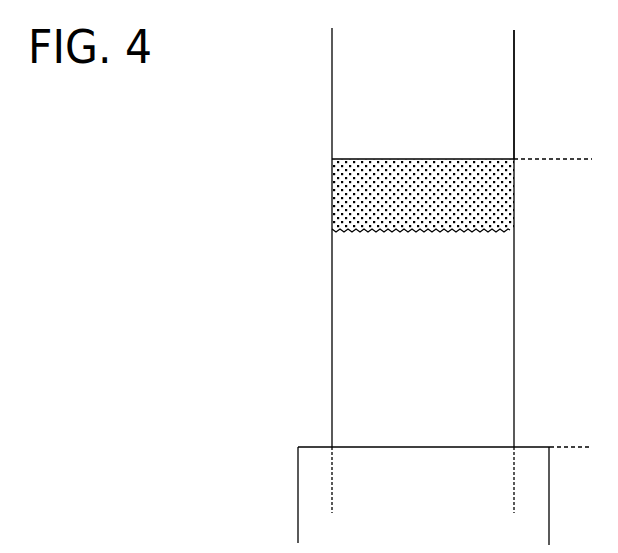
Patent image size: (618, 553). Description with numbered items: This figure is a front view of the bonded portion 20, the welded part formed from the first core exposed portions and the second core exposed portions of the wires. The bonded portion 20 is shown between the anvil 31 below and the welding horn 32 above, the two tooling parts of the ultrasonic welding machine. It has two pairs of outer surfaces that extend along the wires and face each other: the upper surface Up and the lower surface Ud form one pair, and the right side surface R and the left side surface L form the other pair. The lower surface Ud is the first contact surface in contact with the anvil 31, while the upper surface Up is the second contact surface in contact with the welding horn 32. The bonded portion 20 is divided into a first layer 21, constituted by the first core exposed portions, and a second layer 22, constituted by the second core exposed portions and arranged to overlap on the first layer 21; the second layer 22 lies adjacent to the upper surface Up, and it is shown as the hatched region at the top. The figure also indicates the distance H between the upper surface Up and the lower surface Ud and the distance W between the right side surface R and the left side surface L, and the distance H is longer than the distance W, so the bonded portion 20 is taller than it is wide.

The bonded portion 20 is at (270, 370).
The first layer 21 is at (345, 333).
The second layer 22 is at (345, 190).
The anvil 31 is at (549, 493).
The welding horn 32 is at (514, 43).
The upper surface Up is at (429, 157).
The lower surface Ud is at (378, 455).
The left side surface L is at (330, 268).
The right side surface R is at (517, 198).
The distance H is at (577, 161).
The distance W is at (513, 505).